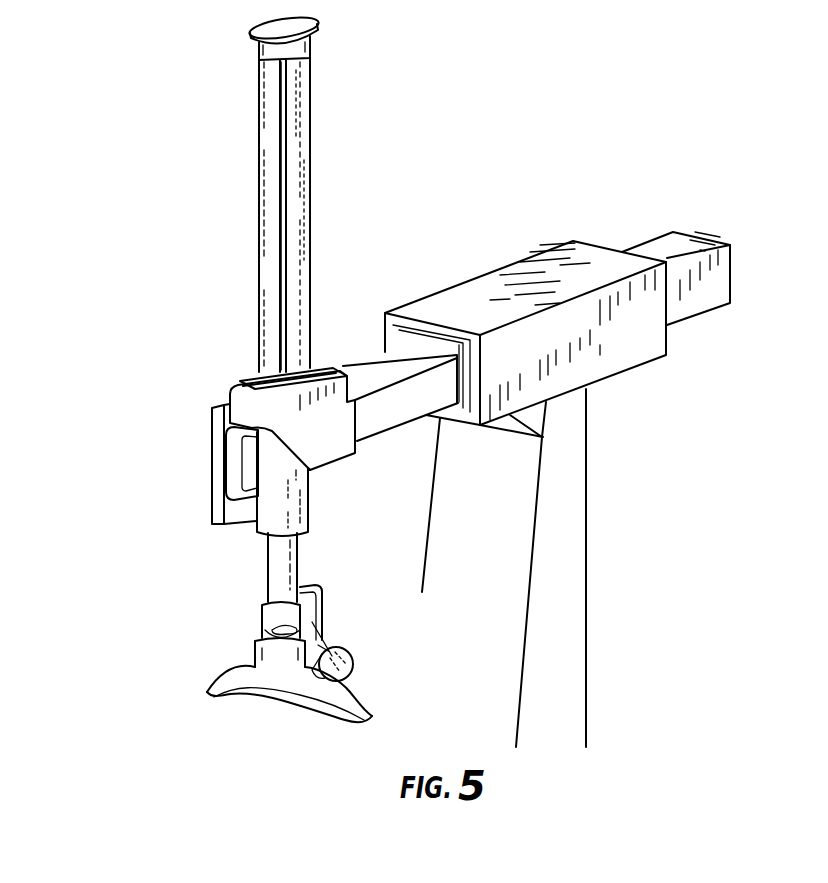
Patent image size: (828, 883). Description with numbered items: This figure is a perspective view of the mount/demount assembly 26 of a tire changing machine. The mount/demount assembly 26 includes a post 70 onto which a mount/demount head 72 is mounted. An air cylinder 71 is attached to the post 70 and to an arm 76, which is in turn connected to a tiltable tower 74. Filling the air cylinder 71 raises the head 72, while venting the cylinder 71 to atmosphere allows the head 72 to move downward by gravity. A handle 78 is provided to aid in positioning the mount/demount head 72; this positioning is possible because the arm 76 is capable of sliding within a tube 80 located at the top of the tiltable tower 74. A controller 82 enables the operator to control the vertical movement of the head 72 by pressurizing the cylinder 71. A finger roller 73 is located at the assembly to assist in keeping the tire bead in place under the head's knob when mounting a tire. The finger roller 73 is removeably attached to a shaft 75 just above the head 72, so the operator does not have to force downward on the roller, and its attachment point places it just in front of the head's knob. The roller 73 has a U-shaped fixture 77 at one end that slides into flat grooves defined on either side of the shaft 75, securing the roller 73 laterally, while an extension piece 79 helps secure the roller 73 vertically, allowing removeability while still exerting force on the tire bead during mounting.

The mount/demount assembly 26 is at (129, 483).
The post 70 is at (310, 157).
The air cylinder 71 is at (270, 214).
The mount/demount head 72 is at (151, 690).
The finger roller 73 is at (343, 635).
The tiltable tower 74 is at (600, 465).
The shaft 75 is at (278, 563).
The arm 76 is at (352, 354).
The U-shaped fixture 77 is at (356, 667).
The handle 78 is at (237, 503).
The extension piece 79 is at (322, 592).
The tube 80 is at (480, 285).
The controller 82 is at (211, 437).